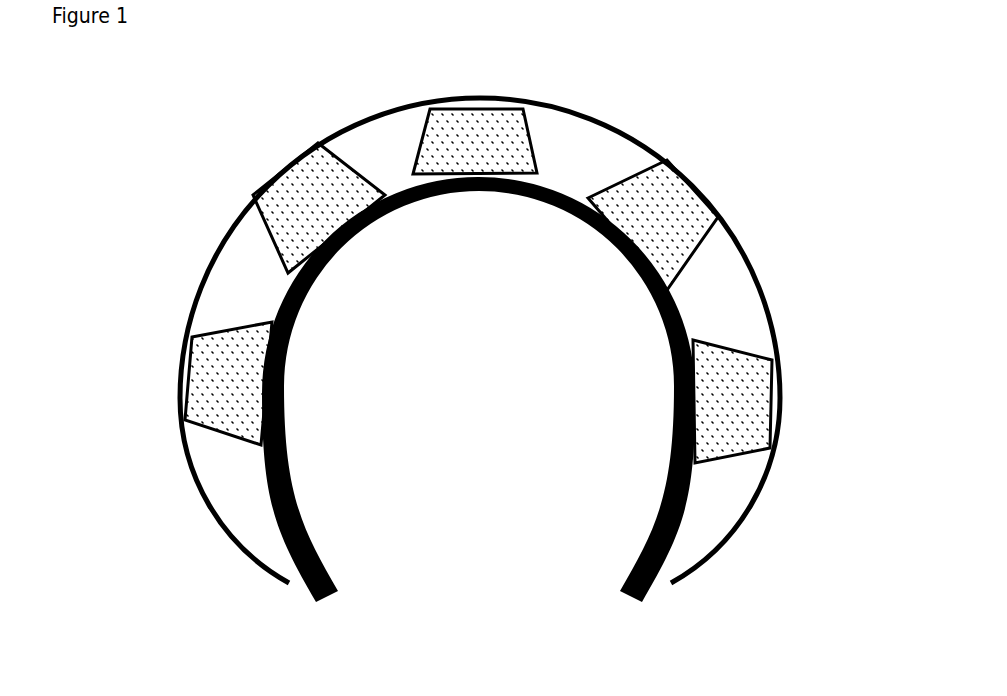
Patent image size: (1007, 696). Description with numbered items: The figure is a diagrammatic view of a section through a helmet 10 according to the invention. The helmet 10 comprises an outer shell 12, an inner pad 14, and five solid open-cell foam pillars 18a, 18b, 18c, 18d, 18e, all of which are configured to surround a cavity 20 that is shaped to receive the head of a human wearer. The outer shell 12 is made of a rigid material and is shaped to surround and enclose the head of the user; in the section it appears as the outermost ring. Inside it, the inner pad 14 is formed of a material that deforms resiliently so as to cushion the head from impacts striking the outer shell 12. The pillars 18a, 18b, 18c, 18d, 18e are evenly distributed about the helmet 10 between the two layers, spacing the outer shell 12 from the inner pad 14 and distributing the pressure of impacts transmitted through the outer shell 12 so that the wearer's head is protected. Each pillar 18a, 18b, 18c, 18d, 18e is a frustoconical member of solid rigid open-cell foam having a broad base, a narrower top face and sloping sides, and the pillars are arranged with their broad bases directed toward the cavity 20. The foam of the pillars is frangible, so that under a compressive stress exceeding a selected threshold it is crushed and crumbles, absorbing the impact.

The helmet 10 is at (641, 89).
The outer shell 12 is at (770, 289).
The inner pad 14 is at (657, 319).
The solid open-cell foam pillar 18a is at (213, 380).
The solid open-cell foam pillar 18b is at (292, 195).
The solid open-cell foam pillar 18c is at (463, 137).
The solid open-cell foam pillar 18d is at (673, 206).
The solid open-cell foam pillar 18e is at (733, 400).
The cavity 20 is at (476, 410).